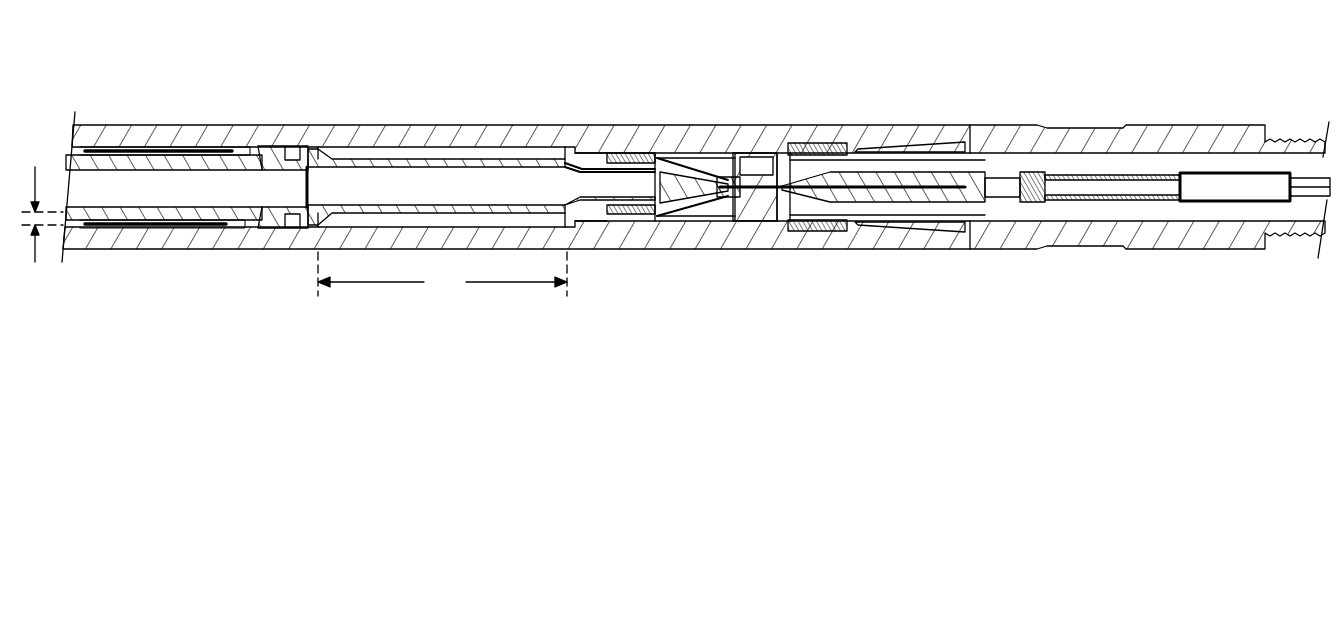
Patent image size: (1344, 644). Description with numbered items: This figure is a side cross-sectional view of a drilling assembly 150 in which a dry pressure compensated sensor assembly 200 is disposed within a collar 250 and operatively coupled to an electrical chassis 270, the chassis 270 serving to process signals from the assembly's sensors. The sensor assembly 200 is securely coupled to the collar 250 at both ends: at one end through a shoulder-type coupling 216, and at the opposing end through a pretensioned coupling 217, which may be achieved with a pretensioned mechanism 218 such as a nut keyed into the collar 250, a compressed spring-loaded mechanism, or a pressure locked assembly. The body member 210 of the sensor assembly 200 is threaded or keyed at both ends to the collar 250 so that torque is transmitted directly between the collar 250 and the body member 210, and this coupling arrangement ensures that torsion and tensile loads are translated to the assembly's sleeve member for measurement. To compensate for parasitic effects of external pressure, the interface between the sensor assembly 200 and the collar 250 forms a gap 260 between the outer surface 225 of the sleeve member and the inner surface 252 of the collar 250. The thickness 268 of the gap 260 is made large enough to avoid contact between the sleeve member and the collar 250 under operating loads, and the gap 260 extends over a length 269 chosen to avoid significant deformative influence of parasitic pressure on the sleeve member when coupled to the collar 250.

The drilling assembly 150 is at (1012, 58).
The dry pressure compensated sensor assembly 200 is at (457, 183).
The body member 210 is at (385, 170).
The shoulder-type coupling 216 is at (283, 158).
The pretensioned coupling 217 is at (640, 213).
The pretensioned mechanism 218 is at (747, 187).
The outer surface 225 is at (530, 160).
The collar 250 is at (650, 133).
The inner surface 252 is at (425, 147).
The gap 260 is at (345, 150).
The thickness 268 is at (41, 227).
The length 269 is at (442, 274).
The electrical chassis 270 is at (258, 147).